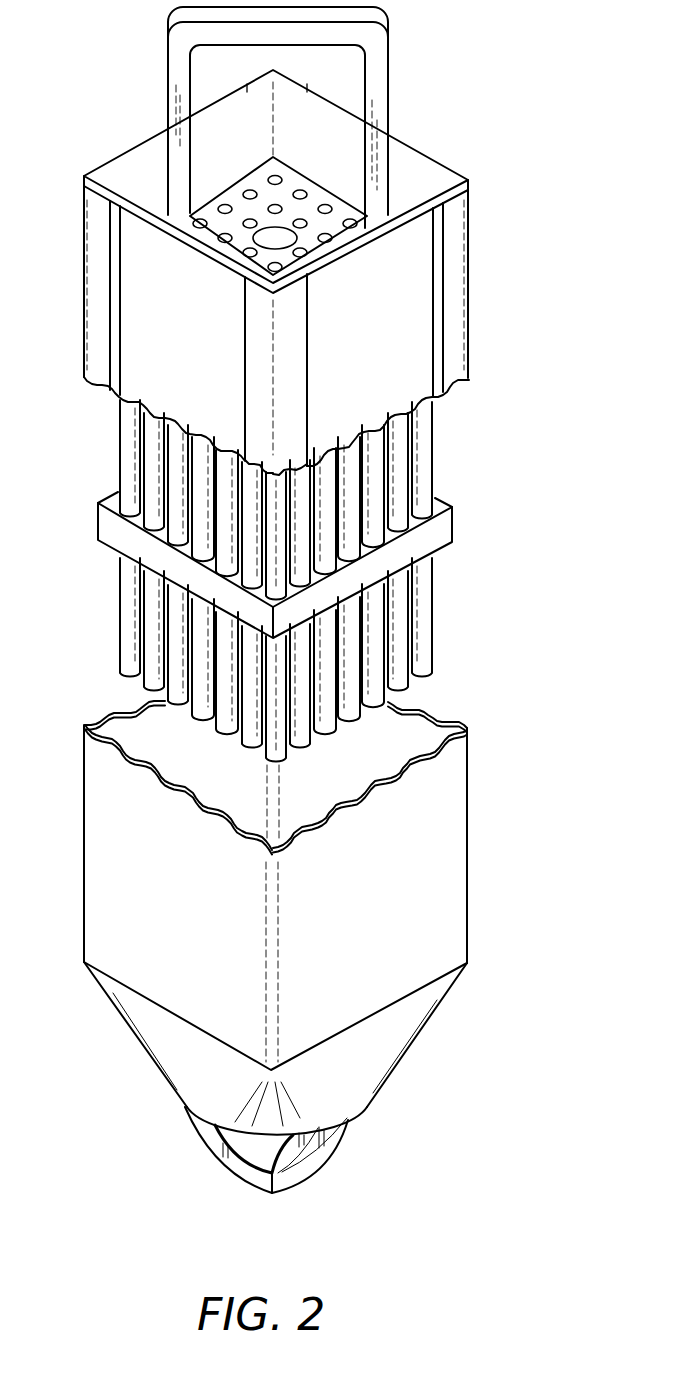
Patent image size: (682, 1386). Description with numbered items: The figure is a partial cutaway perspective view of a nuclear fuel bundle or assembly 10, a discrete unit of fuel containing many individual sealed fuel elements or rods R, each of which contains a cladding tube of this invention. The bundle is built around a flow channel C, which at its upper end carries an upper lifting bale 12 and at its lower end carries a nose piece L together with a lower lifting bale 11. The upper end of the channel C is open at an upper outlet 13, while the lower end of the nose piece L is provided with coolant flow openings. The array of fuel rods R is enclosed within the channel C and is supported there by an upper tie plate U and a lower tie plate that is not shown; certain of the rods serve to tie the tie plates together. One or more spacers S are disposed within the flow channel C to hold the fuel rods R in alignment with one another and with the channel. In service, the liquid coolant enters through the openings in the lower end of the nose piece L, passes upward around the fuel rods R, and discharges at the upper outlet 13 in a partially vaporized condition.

The nuclear fuel bundle 10 is at (497, 232).
The upper lifting bale 12 is at (378, 47).
The upper outlet 13 is at (280, 240).
The upper tie plate U is at (442, 172).
The fuel rods R is at (118, 440).
The spacer S is at (447, 530).
The flow channel C is at (123, 852).
The nose piece L is at (380, 1038).
The lower lifting bale 11 is at (317, 1173).